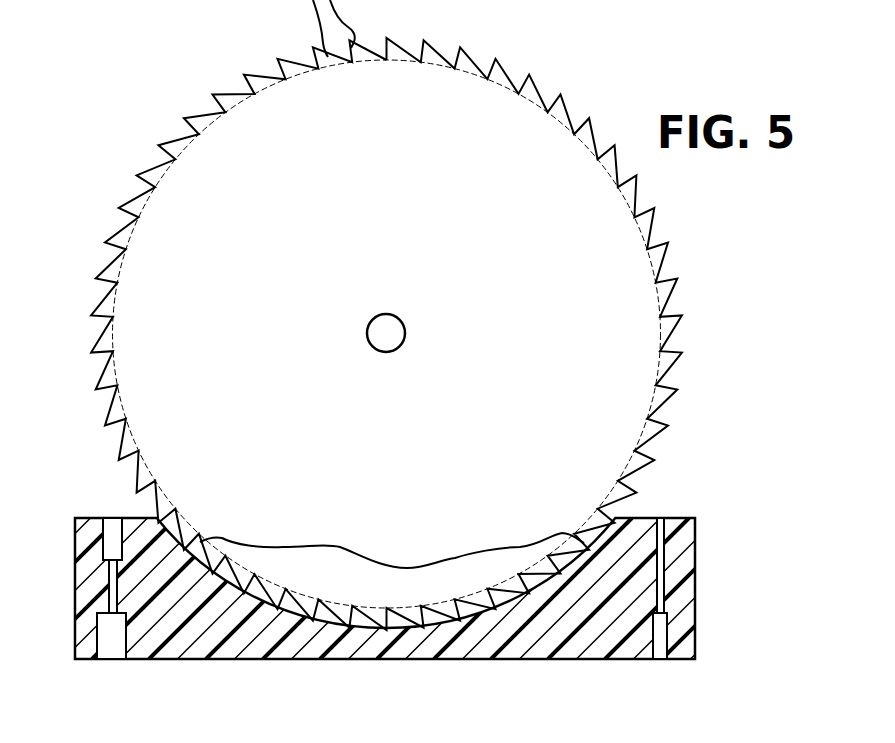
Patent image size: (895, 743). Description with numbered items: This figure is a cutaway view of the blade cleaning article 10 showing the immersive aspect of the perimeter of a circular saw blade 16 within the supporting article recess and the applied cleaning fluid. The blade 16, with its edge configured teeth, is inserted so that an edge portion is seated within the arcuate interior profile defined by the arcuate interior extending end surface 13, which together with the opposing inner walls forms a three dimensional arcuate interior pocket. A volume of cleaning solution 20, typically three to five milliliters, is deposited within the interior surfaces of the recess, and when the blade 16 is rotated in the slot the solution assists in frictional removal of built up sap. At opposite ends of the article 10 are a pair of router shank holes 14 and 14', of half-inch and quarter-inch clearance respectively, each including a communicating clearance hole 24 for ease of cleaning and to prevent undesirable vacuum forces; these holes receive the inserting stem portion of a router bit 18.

The article 10 is at (721, 479).
The arcuate interior extending end surface 13 is at (358, 626).
The router shank hole 14 is at (396, 575).
The router shank hole 14' is at (90, 655).
The circular saw blade 16 is at (419, 169).
The router bit 18 is at (760, 739).
The cleaning solution 20 is at (337, 565).
The clearance hole 24 is at (110, 587).